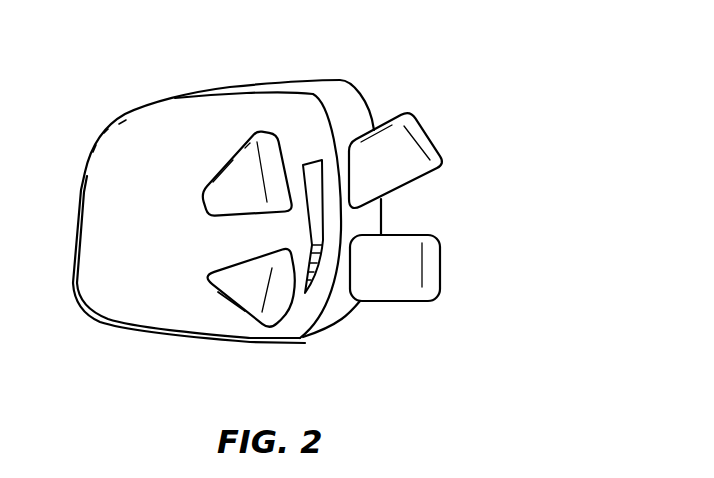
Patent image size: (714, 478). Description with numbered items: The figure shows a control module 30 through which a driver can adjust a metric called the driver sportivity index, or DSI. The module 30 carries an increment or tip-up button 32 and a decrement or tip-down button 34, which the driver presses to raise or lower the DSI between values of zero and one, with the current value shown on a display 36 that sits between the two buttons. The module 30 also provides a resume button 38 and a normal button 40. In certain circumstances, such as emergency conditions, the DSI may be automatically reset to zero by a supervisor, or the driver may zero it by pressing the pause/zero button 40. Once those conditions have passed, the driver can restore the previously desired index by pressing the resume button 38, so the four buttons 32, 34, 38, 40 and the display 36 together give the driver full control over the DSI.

The module 30 is at (130, 56).
The increment or tip-up button 32 is at (437, 135).
The decrement or tip-down button 34 is at (430, 266).
The display 36 is at (316, 168).
The resume button 38 is at (268, 142).
The normal button 40 is at (276, 292).